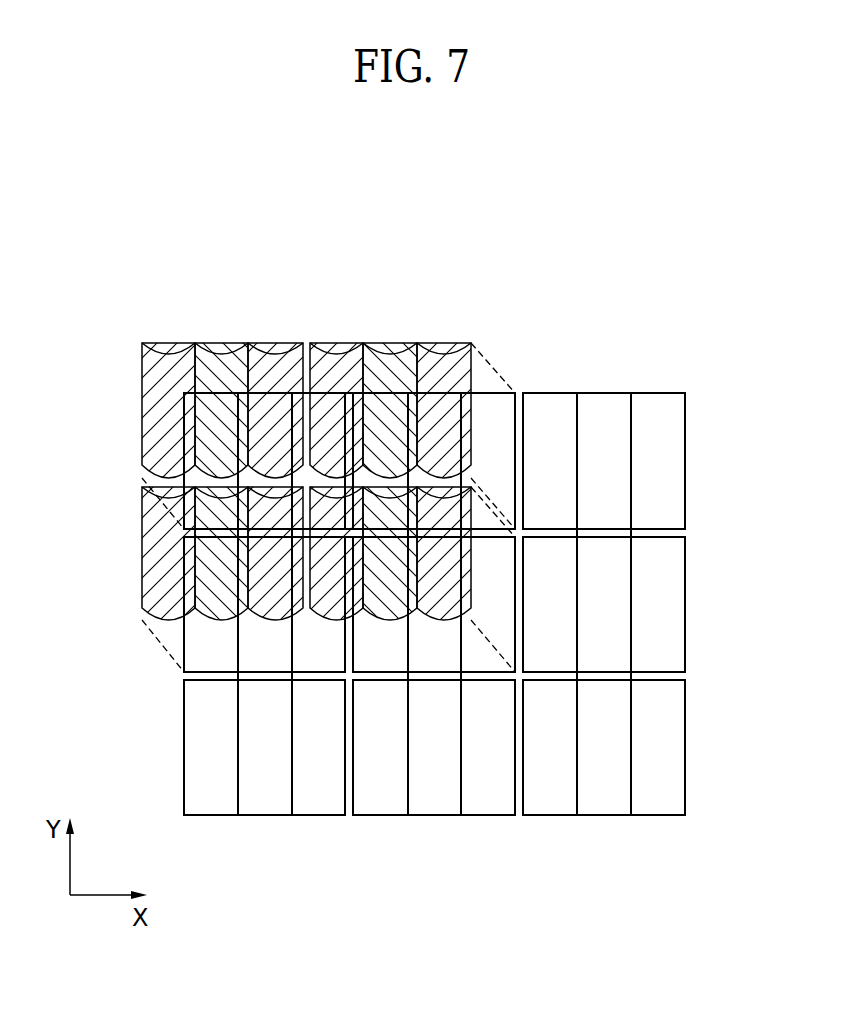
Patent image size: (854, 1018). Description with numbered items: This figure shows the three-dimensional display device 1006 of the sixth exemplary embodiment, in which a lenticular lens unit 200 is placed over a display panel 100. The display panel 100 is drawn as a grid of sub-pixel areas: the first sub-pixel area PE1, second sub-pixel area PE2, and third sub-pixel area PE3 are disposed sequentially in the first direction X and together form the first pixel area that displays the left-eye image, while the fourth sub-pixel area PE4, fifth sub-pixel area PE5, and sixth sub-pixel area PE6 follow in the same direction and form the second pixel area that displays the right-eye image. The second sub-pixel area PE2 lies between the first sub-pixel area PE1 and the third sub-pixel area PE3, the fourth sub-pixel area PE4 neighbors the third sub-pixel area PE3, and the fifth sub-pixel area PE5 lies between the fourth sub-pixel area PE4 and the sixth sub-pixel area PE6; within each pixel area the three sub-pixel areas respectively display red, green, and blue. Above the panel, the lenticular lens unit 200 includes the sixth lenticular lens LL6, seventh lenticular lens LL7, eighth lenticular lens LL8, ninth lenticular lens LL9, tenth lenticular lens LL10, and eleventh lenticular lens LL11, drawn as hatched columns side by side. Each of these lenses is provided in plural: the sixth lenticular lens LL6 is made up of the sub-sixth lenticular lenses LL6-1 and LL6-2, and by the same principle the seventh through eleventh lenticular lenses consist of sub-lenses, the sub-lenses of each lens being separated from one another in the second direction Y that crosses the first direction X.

The 3D display device 1006 is at (408, 194).
The lenticular lens unit 200 is at (453, 283).
The sixth lenticular lens LL6 is at (170, 352).
The sub-sixth lenticular lens LL6-1 is at (153, 410).
The sub-sixth lenticular lens LL6-2 is at (153, 540).
The seventh lenticular lens LL7 is at (220, 352).
The eighth lenticular lens LL8 is at (275, 352).
The ninth lenticular lens LL9 is at (338, 352).
The tenth lenticular lens LL10 is at (390, 352).
The eleventh lenticular lens LL11 is at (443, 352).
The display panel 100 is at (715, 618).
The first sub-pixel area PE1 is at (210, 803).
The second sub-pixel area PE2 is at (263, 803).
The third sub-pixel area PE3 is at (318, 803).
The fourth sub-pixel area PE4 is at (385, 803).
The fifth sub-pixel area PE5 is at (439, 803).
The sixth sub-pixel area PE6 is at (494, 803).